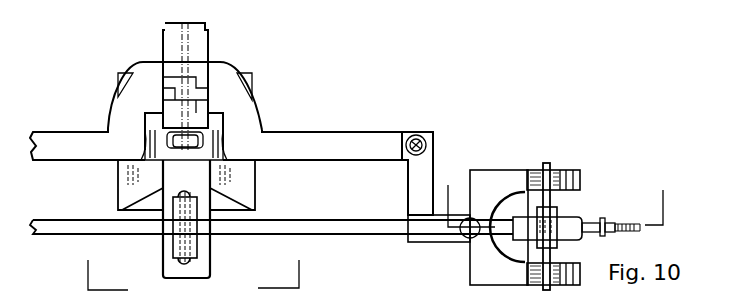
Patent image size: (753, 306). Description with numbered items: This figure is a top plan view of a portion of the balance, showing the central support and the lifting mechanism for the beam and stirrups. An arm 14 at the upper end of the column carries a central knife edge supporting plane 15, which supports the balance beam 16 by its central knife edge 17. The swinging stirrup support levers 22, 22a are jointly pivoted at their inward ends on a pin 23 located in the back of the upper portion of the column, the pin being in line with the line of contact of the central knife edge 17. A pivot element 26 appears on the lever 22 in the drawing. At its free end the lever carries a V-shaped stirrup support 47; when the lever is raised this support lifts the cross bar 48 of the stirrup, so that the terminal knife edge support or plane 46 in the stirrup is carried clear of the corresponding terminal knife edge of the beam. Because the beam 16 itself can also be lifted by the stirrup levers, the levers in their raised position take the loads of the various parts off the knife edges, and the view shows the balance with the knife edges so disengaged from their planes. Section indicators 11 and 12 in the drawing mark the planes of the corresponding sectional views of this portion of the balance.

The stirrup support lever 22a is at (65, 130).
The pin 23 is at (188, 52).
The stirrup support lever 22 is at (377, 132).
The pivot pin 26 is at (428, 143).
The balance beam 16 is at (352, 235).
The arm 14 is at (212, 267).
The central knife edge 17 is at (175, 250).
The central knife edge supporting plane 15 is at (182, 263).
The V-shaped stirrup support 47 is at (570, 168).
The terminal knife edge support or plane 46 is at (556, 212).
The cross bar 48 is at (548, 164).
The section line 11- 11 is at (555, 203).
The section line 12- 12 is at (193, 271).